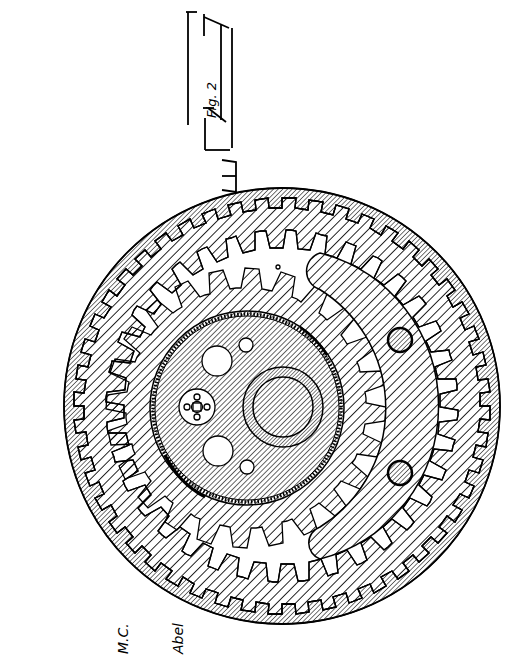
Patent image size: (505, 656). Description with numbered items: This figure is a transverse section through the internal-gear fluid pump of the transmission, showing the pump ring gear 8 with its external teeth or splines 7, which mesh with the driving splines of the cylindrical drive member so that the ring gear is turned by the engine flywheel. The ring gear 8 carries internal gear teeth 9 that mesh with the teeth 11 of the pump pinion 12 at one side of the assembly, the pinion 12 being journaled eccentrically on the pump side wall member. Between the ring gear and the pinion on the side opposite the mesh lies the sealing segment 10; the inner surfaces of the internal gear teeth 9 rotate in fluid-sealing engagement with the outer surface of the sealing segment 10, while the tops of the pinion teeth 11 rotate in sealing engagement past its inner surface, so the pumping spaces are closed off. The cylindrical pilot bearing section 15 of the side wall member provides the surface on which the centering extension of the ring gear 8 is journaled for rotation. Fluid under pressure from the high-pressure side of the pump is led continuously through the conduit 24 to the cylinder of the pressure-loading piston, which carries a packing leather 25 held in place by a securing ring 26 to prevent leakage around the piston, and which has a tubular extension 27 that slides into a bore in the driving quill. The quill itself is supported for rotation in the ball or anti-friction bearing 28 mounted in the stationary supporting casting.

The teeth or splines 7 is at (348, 548).
The pump ring gear 8 is at (262, 607).
The internal gear teeth 9 is at (327, 607).
The sealing segment 10 is at (343, 248).
The teeth of pump pinion 11 is at (209, 203).
The pump pinion 12 is at (190, 307).
The cylindrical pilot bearing section 15 is at (151, 398).
The conduit 24 is at (280, 270).
The packing leather 25 is at (403, 347).
The securing ring 26 is at (403, 461).
The tubular extension 27 is at (201, 417).
The ball or anti-friction bearing 28 is at (323, 455).